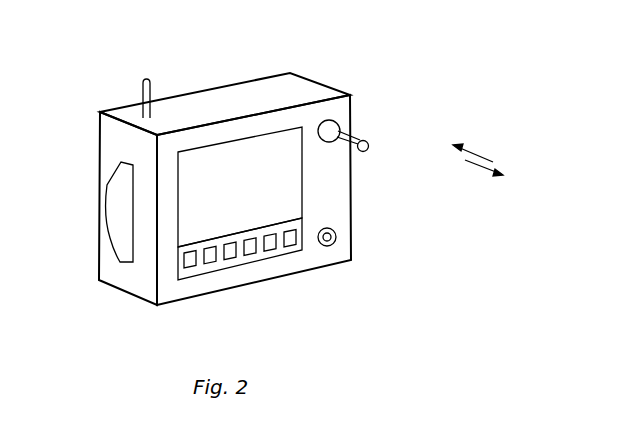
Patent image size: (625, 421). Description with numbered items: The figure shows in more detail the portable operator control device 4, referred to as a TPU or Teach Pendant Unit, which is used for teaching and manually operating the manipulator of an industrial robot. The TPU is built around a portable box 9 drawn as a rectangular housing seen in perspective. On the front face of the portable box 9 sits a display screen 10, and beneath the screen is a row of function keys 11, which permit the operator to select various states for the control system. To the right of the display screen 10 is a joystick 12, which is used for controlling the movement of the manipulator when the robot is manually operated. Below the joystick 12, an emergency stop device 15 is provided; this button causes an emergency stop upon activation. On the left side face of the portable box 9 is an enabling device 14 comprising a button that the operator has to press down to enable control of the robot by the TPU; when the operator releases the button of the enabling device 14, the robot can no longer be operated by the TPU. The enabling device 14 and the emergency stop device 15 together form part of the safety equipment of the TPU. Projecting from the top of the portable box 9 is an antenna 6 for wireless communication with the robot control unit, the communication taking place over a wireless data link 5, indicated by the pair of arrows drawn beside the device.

The portable operator control device 4 is at (223, 182).
The wireless data link 5 is at (478, 154).
The antenna 6 is at (143, 80).
The portable box 9 is at (216, 84).
The display screen 10 is at (277, 152).
The function keys 11 is at (208, 260).
The joystick 12 is at (368, 141).
The enabling device 14 is at (120, 205).
The emergency stop device 15 is at (337, 231).